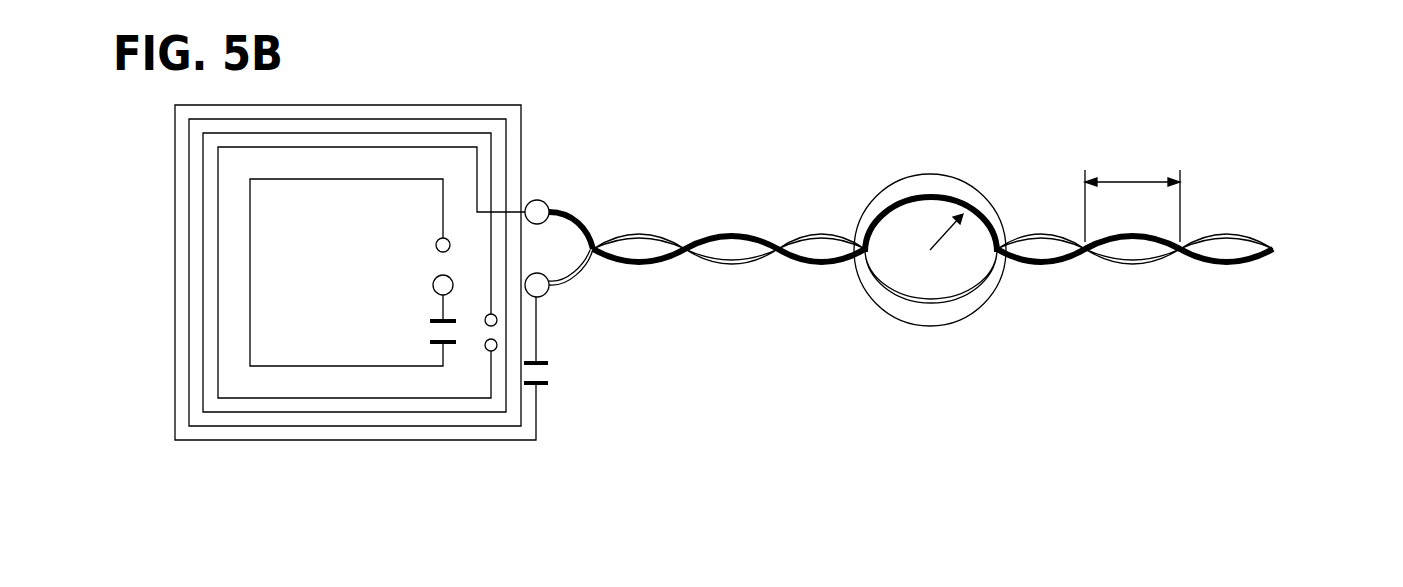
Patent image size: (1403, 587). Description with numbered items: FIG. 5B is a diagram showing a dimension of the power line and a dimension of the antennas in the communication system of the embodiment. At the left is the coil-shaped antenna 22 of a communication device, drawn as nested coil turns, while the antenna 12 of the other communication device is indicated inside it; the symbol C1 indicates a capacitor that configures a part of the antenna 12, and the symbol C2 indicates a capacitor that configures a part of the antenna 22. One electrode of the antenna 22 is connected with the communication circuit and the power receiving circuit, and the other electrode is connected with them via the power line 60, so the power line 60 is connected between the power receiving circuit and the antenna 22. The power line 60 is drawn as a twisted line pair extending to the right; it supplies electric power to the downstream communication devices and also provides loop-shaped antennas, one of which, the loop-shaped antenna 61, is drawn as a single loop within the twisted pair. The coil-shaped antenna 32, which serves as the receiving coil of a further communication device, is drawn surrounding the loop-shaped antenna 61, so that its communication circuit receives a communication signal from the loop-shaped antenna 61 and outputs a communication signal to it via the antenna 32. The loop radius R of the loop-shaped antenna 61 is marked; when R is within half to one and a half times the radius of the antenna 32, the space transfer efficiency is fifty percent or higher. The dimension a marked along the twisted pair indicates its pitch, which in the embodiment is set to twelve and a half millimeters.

The antenna 22 is at (392, 442).
The antenna 12 is at (320, 365).
The capacitor C1 is at (443, 341).
The capacitor C2 is at (543, 373).
The power line 60 is at (808, 263).
The loop-shaped antenna 61 is at (920, 305).
The antenna 32 is at (963, 178).
The radius of the loop-shaped antenna R is at (944, 230).
The pitch a is at (1132, 200).